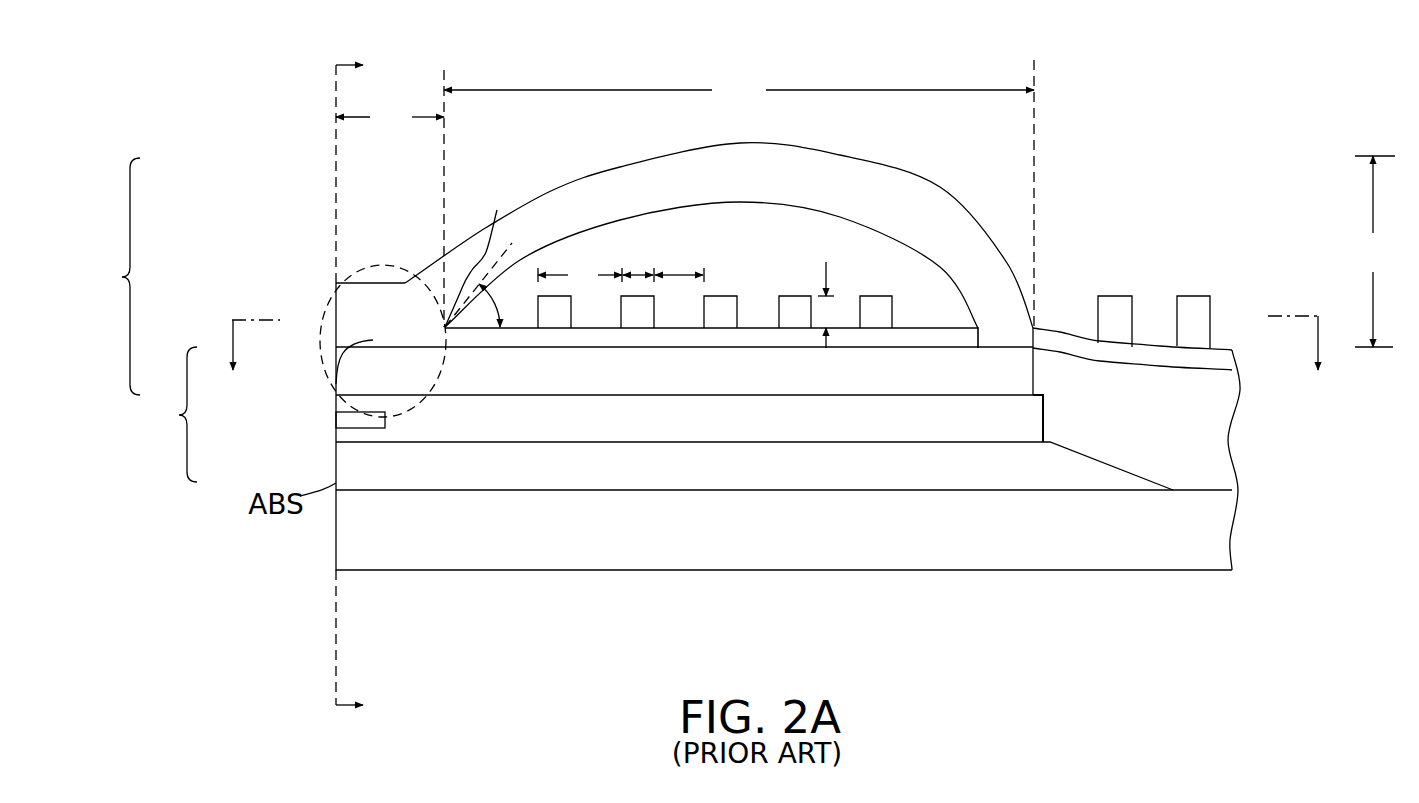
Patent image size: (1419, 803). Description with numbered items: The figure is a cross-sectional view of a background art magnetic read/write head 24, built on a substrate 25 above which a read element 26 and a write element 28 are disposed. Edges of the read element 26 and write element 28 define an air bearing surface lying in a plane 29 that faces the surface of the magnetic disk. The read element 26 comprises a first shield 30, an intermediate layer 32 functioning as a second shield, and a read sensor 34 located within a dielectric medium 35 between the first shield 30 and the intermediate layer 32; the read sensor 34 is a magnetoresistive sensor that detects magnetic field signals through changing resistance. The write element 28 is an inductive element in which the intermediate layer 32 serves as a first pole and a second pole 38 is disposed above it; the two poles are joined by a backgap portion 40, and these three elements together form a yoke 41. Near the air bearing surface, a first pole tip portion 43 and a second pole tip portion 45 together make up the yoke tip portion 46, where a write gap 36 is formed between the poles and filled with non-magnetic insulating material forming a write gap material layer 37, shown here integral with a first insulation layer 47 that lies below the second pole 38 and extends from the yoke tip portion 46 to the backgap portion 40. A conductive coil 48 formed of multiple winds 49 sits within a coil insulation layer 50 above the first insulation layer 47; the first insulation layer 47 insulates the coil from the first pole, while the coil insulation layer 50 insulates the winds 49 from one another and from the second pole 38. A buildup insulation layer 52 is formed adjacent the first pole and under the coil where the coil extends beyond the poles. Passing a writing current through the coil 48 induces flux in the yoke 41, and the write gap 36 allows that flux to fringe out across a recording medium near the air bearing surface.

The magnetic read/write head 24 is at (1117, 117).
The substrate 25 is at (441, 552).
The read element 26 is at (168, 414).
The write element 28 is at (112, 276).
The plane 29 is at (336, 82).
The first shield 30 is at (441, 480).
The intermediate layer 32 is at (511, 389).
The read sensor 34 is at (334, 423).
The dielectric medium 35 is at (493, 433).
The write gap 36 is at (320, 340).
The write gap material layer 37 is at (336, 383).
The second pole 38 is at (726, 187).
The backgap portion 40 is at (1013, 322).
The yoke 41 is at (937, 177).
The first pole tip portion 43 is at (364, 389).
The second pole tip portion 45 is at (366, 318).
The yoke tip portion 46 is at (377, 263).
The first insulation layer 47 is at (623, 335).
The conductive coil 48 is at (745, 268).
The winds 49 is at (877, 302).
The coil insulation layer 50 is at (717, 245).
The buildup insulation layer 52 is at (1116, 427).